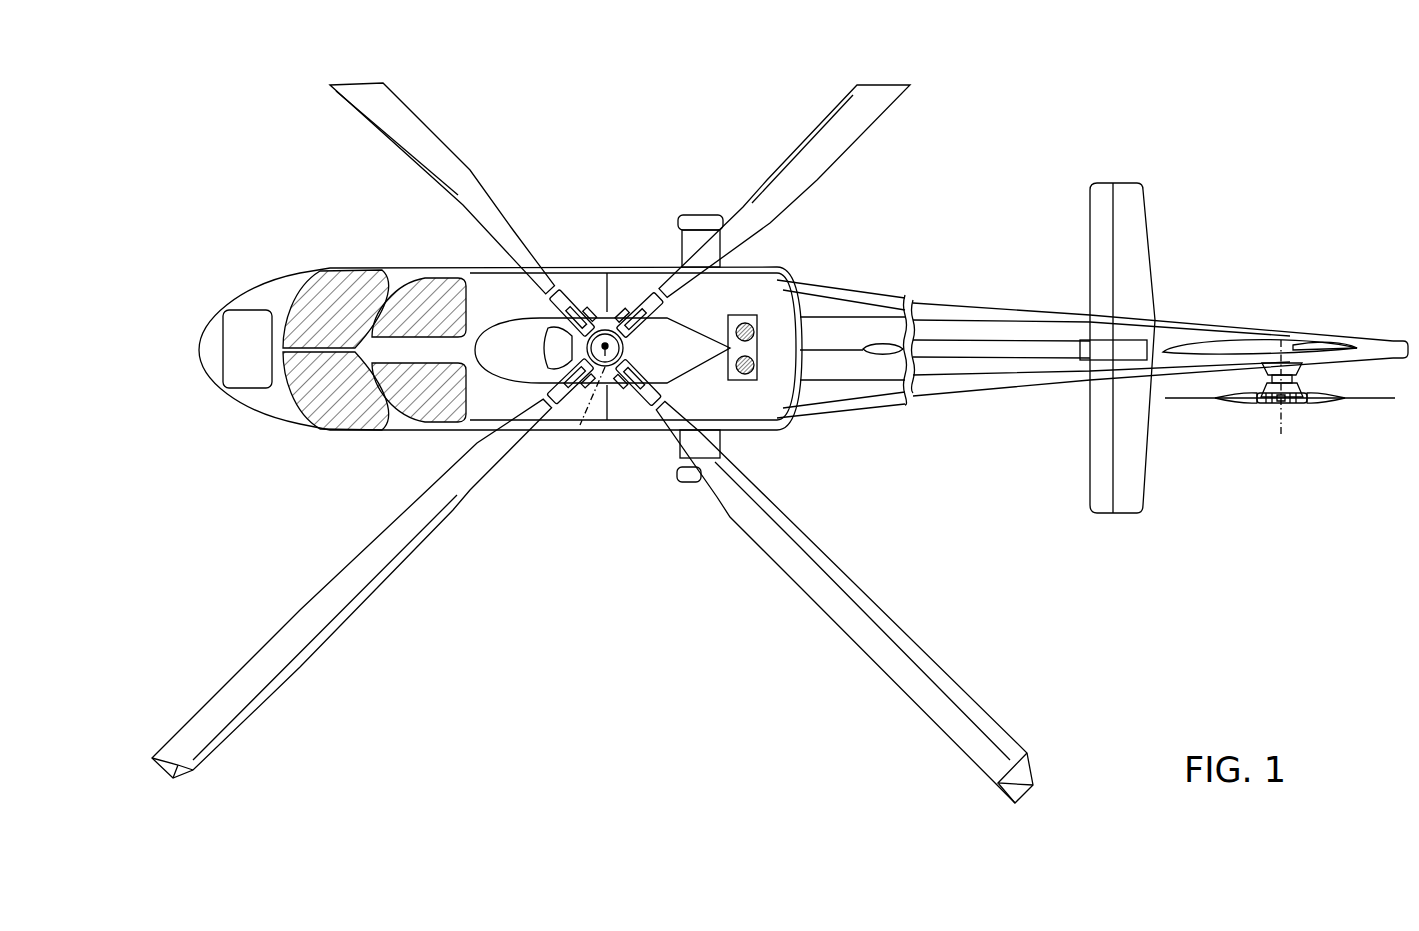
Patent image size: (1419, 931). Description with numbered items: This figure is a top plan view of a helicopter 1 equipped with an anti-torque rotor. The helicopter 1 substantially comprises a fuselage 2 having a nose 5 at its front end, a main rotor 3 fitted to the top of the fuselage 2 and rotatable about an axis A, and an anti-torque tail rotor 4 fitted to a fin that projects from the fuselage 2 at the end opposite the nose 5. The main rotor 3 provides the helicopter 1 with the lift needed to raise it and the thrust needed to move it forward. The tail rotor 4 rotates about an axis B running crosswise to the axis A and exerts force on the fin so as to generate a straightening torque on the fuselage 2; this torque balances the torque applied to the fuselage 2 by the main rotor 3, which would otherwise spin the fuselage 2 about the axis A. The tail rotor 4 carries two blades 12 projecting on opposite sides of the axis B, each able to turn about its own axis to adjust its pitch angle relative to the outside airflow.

The helicopter 1 is at (780, 443).
The fuselage 2 is at (273, 297).
The main rotor 3 is at (821, 541).
The anti-torque tail rotor 4 is at (1280, 481).
The nose 5 is at (272, 400).
The blades 12 is at (1220, 397).
The axis of rotation of main rotor A is at (581, 422).
The axis of rotation of tail rotor B is at (1280, 430).